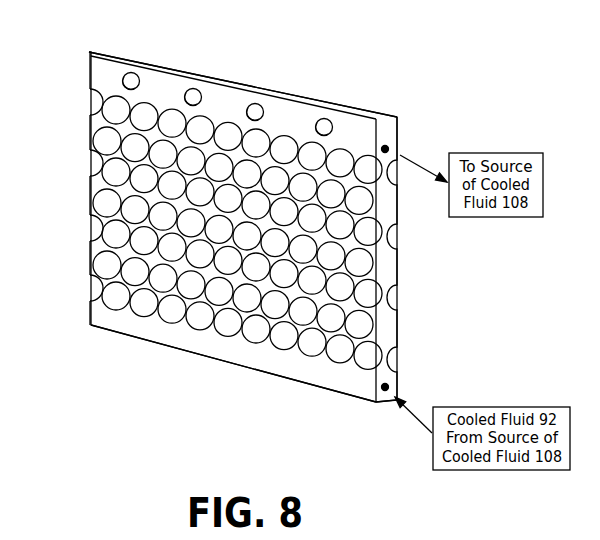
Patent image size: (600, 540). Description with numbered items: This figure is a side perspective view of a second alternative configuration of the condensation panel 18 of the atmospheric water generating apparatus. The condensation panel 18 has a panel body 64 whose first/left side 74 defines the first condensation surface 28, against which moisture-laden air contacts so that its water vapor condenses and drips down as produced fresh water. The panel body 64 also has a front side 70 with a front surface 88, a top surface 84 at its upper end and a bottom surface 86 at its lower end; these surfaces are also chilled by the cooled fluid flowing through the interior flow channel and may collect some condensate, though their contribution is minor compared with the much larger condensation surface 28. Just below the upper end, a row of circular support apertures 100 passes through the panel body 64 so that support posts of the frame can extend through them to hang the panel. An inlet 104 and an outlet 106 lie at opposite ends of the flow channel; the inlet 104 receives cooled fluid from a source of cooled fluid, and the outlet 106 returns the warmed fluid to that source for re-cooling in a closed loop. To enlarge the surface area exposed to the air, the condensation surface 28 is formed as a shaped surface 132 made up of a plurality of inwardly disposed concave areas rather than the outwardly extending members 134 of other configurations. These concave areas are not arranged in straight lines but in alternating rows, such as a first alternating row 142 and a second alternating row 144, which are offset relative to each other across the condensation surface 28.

The condensation panel 18 is at (358, 72).
The first condensation surface 28 is at (105, 157).
The panel body 64 is at (386, 333).
The front side 70 is at (417, 243).
The first/left side 74 is at (108, 72).
The top surface 84 is at (227, 73).
The bottom surface 86 is at (200, 355).
The front surface 88 is at (385, 269).
The support apertures 100 is at (139, 81).
The inlet 104 is at (388, 386).
The outlet 106 is at (388, 147).
The shaped surface 132 is at (120, 248).
The outwardly extending members 134 is at (168, 313).
The first alternating row 142 is at (88, 103).
The second alternating row 144 is at (90, 135).